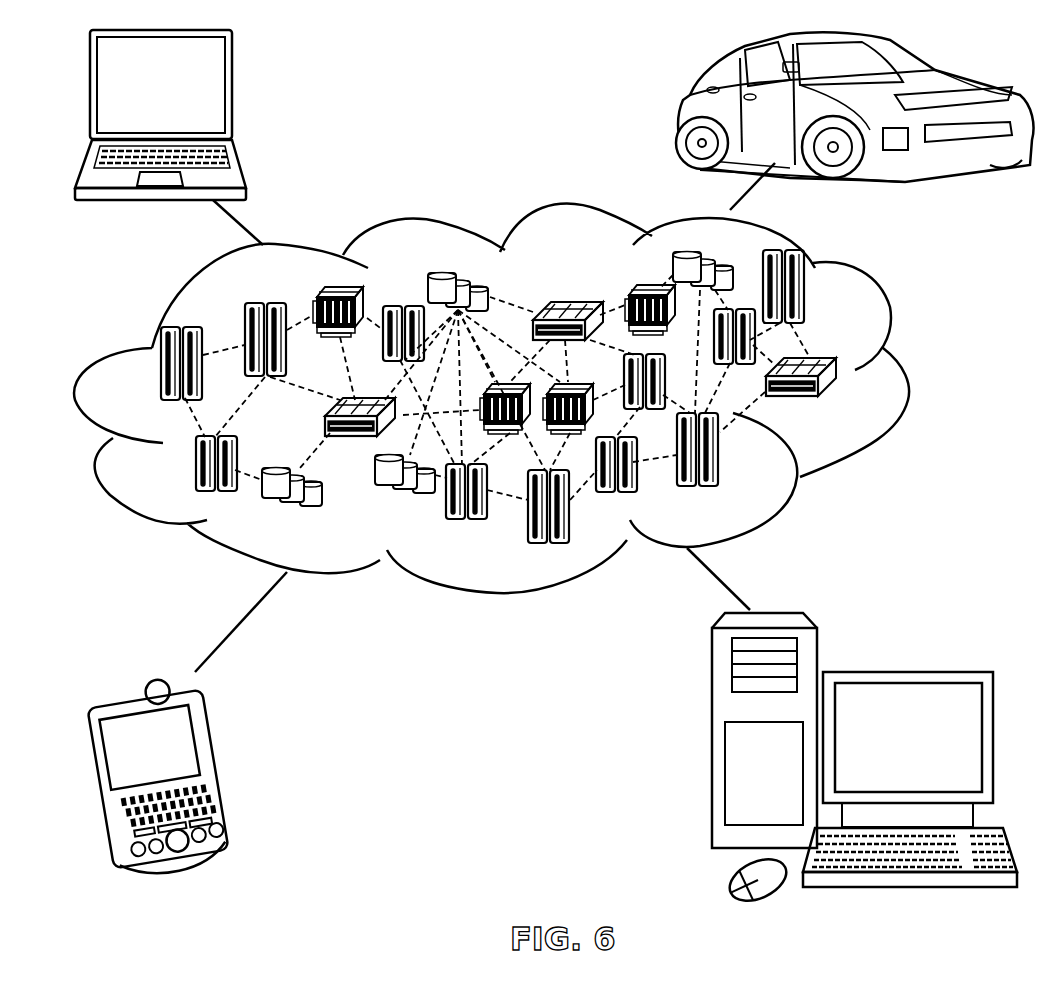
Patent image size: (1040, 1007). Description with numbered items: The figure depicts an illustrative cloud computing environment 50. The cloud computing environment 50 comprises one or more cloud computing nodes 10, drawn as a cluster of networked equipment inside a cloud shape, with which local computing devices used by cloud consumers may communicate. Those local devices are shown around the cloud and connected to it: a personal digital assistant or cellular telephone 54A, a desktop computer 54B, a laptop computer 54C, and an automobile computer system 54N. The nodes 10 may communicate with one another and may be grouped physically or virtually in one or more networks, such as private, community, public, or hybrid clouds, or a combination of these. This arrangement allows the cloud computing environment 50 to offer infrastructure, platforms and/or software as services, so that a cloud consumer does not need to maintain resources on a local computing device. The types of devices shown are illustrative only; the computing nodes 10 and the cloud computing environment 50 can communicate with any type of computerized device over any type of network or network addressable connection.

The cloud computing node 10 is at (850, 406).
The cloud computing environment 50 is at (907, 375).
The personal digital assistant or cellular telephone 54A is at (223, 768).
The desktop computer 54B is at (905, 672).
The laptop computer 54C is at (233, 92).
The automobile computer system 54N is at (680, 110).